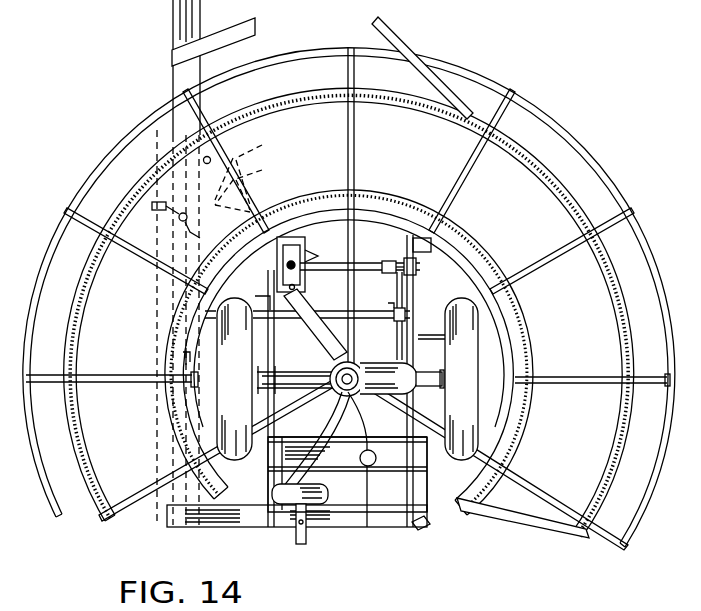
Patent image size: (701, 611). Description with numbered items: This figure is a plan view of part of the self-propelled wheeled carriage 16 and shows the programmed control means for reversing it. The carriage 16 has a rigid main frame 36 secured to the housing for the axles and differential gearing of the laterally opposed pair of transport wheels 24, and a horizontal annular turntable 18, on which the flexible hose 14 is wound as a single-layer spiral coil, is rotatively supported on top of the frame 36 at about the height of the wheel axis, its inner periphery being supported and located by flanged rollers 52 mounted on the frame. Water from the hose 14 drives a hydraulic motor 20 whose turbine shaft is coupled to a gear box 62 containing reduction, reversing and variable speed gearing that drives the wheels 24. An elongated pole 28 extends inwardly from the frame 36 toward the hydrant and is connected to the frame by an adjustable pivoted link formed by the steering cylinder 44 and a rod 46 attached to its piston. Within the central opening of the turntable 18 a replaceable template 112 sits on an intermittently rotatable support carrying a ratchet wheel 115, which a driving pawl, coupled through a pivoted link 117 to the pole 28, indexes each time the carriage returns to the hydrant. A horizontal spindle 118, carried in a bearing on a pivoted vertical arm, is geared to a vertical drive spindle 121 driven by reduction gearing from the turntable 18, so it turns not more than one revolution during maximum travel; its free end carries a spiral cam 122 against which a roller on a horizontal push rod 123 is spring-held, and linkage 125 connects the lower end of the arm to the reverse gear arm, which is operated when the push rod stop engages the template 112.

The flexible hose 14 is at (413, 43).
The self-propelled wheeled carriage 16 is at (599, 162).
The annular turntable 18 is at (479, 280).
The hydraulic motor 20 is at (330, 492).
The wheels 24 is at (242, 379).
The pole 28 is at (190, 18).
The main frame 36 is at (478, 334).
The steering cylinder 44 is at (345, 340).
The rod 46 is at (246, 162).
The flanged rollers 52 is at (420, 532).
The gear box 62 is at (398, 456).
The replaceable template 112 is at (291, 238).
The ratchet wheel 115 is at (279, 287).
The pivoted link 117 is at (221, 191).
The horizontal spindle 118 is at (403, 310).
The vertical drive spindle 121 is at (381, 392).
The rod 122 is at (430, 266).
The push rod 123 is at (365, 262).
The linkage 125 is at (180, 354).